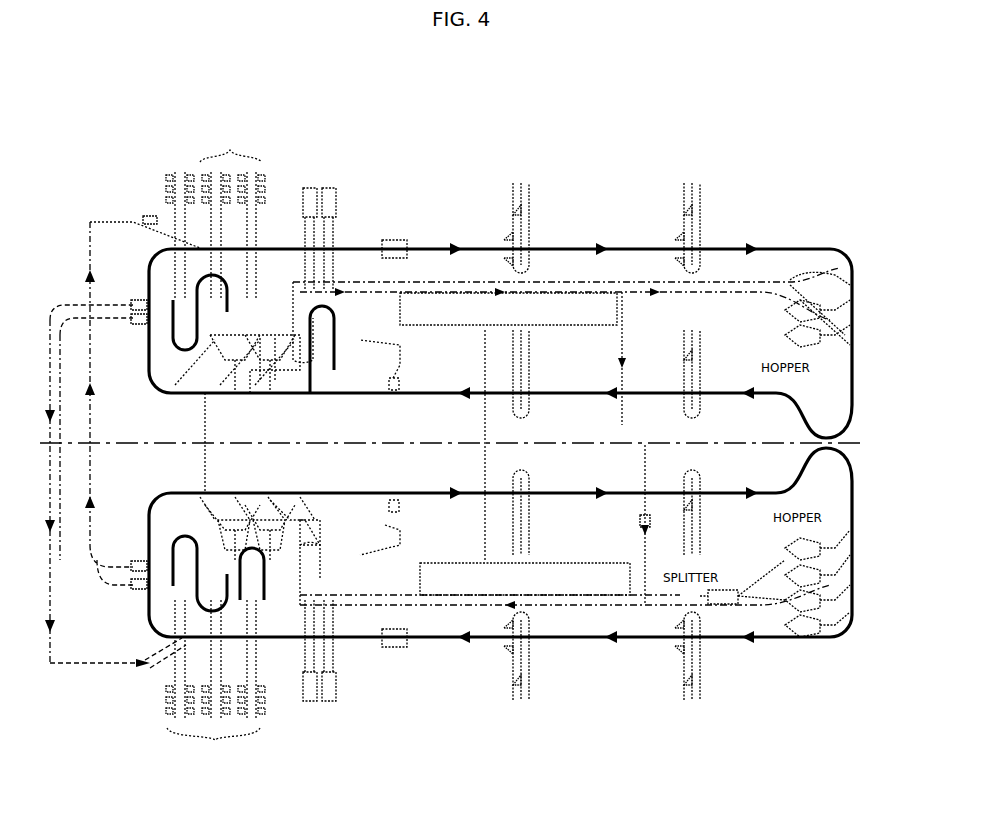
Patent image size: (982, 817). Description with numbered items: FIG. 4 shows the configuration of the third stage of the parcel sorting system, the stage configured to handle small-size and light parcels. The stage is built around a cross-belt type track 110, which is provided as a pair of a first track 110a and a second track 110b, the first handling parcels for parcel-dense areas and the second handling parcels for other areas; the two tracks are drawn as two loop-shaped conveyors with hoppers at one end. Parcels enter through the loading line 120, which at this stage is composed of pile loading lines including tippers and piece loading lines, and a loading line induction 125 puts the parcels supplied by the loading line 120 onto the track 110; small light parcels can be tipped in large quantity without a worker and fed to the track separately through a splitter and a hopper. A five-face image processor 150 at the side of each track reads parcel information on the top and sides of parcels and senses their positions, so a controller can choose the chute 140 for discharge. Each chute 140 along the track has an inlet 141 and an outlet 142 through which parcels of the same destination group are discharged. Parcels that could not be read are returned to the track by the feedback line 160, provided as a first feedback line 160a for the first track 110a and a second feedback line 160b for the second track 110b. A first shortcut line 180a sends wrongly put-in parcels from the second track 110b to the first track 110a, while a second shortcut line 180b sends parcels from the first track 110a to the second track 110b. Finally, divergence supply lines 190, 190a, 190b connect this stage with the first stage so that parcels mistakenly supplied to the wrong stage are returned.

The track 110 is at (540, 445).
The first track 110a is at (818, 637).
The second track 110b is at (828, 249).
The loading line 120 is at (264, 190).
The loading line induction 125 is at (290, 492).
The chute 140 is at (634, 428).
The inlet 141 is at (680, 262).
The outlet 142 is at (676, 215).
The 5-face image processor 150 is at (393, 240).
The feedback line 160 is at (485, 433).
The first feedback line 160a is at (390, 515).
The second feedback line 160b is at (390, 372).
The first shortcut line 180a is at (78, 422).
The second shortcut line 180b is at (85, 464).
The small-size/medium and large-size divergence supply line 190 is at (245, 443).
The small-size/medium and large-size divergence supply line 190a is at (158, 561).
The small-size/medium and large-size divergence supply line 190b is at (210, 350).